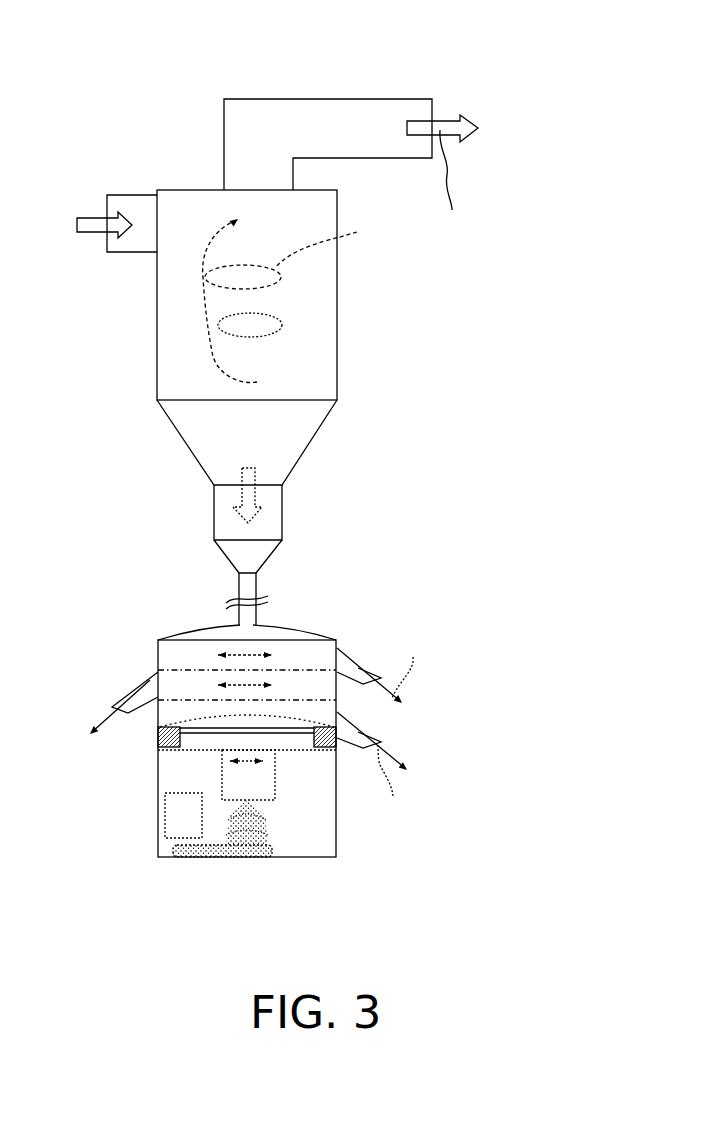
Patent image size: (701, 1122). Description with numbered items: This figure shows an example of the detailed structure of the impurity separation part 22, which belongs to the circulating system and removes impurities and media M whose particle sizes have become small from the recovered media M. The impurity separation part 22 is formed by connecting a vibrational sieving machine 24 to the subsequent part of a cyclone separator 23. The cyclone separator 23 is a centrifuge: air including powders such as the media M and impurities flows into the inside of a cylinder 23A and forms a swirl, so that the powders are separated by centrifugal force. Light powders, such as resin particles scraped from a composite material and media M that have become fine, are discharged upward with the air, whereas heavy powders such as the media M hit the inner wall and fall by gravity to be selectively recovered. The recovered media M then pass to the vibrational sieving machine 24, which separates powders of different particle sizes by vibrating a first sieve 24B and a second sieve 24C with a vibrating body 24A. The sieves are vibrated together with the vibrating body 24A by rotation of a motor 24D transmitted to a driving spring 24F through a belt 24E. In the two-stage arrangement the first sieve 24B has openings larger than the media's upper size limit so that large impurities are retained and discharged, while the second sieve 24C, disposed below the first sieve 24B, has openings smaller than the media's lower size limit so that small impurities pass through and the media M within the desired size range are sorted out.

The impurity separation part 22 is at (76, 84).
The cyclone separator 23 is at (185, 189).
The cylinder 23A is at (337, 330).
The vibrational sieving machine 24 is at (173, 629).
The vibrating body 24A is at (222, 783).
The first sieve 24B is at (158, 668).
The second sieve 24C is at (340, 688).
The motor 24D is at (158, 820).
The belt 24E is at (192, 860).
The driving spring 24F is at (270, 827).
The media M is at (92, 216).